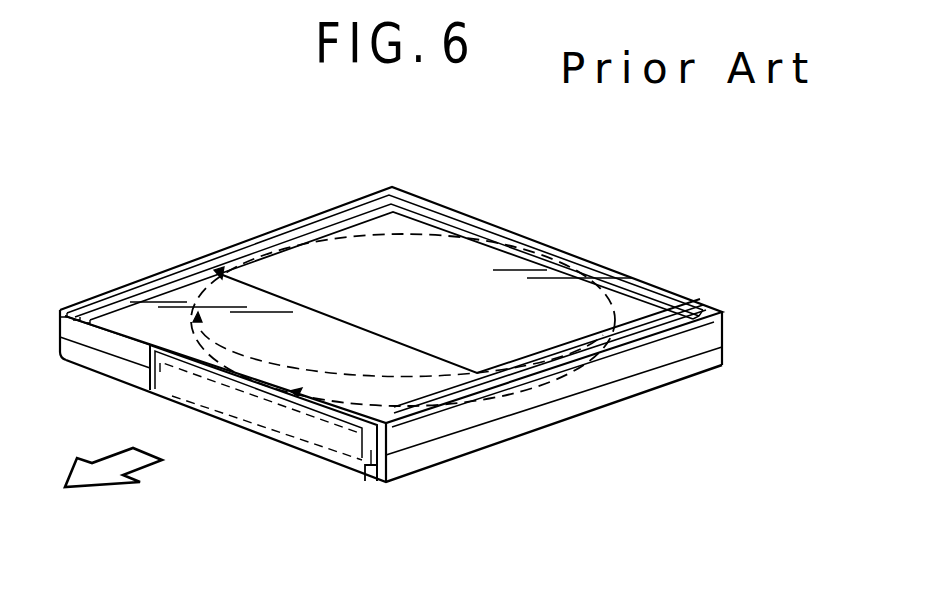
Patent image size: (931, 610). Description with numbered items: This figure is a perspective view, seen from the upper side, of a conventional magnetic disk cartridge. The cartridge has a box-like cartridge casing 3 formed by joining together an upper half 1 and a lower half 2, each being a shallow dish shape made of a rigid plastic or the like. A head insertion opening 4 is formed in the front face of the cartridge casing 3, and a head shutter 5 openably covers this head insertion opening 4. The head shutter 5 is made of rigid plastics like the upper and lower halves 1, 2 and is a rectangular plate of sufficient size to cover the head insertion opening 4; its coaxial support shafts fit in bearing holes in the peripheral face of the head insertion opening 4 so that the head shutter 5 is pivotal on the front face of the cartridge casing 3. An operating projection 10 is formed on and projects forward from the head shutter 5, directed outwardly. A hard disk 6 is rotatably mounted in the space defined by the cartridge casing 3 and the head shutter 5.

The upper half 1 is at (723, 326).
The lower half 2 is at (712, 353).
The cartridge casing 3 is at (771, 279).
The head insertion opening 4 is at (140, 374).
The head shutter 5 is at (297, 428).
The hard disk 6 is at (533, 247).
The operating projection 10 is at (378, 481).